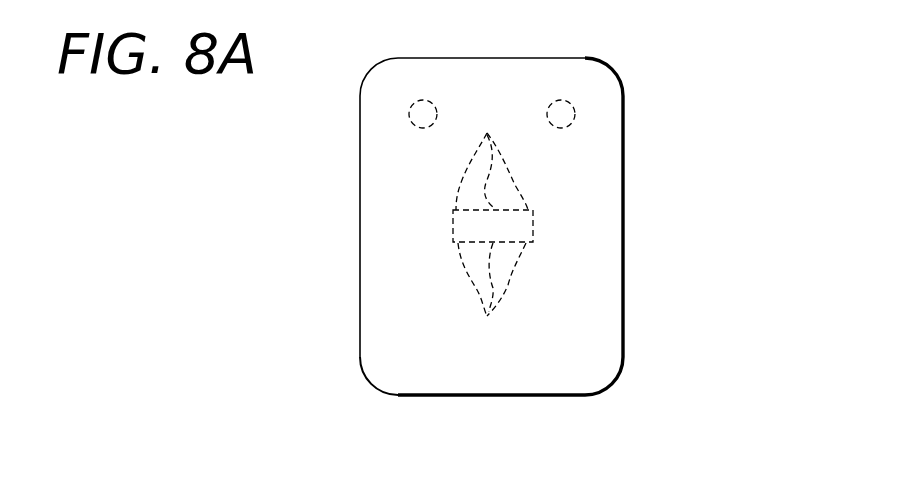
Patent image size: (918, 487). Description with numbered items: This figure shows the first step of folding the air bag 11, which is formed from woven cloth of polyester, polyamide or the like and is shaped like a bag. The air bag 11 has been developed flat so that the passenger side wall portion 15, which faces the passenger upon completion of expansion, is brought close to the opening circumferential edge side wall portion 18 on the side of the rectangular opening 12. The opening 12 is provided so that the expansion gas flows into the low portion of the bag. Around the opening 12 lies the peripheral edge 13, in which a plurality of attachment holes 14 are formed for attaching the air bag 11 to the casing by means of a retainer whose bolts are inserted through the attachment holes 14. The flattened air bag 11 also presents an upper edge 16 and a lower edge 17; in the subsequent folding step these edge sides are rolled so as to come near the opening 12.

The air bag 11 is at (703, 139).
The rectangular opening 12 is at (522, 225).
The peripheral edge 13 is at (515, 265).
The attachment holes 14 is at (487, 134).
The passenger side wall portion 15 is at (380, 205).
The upper edge 16 is at (512, 58).
The lower edge 17 is at (440, 397).
The opening circumferential edge side wall portion 18 is at (380, 247).